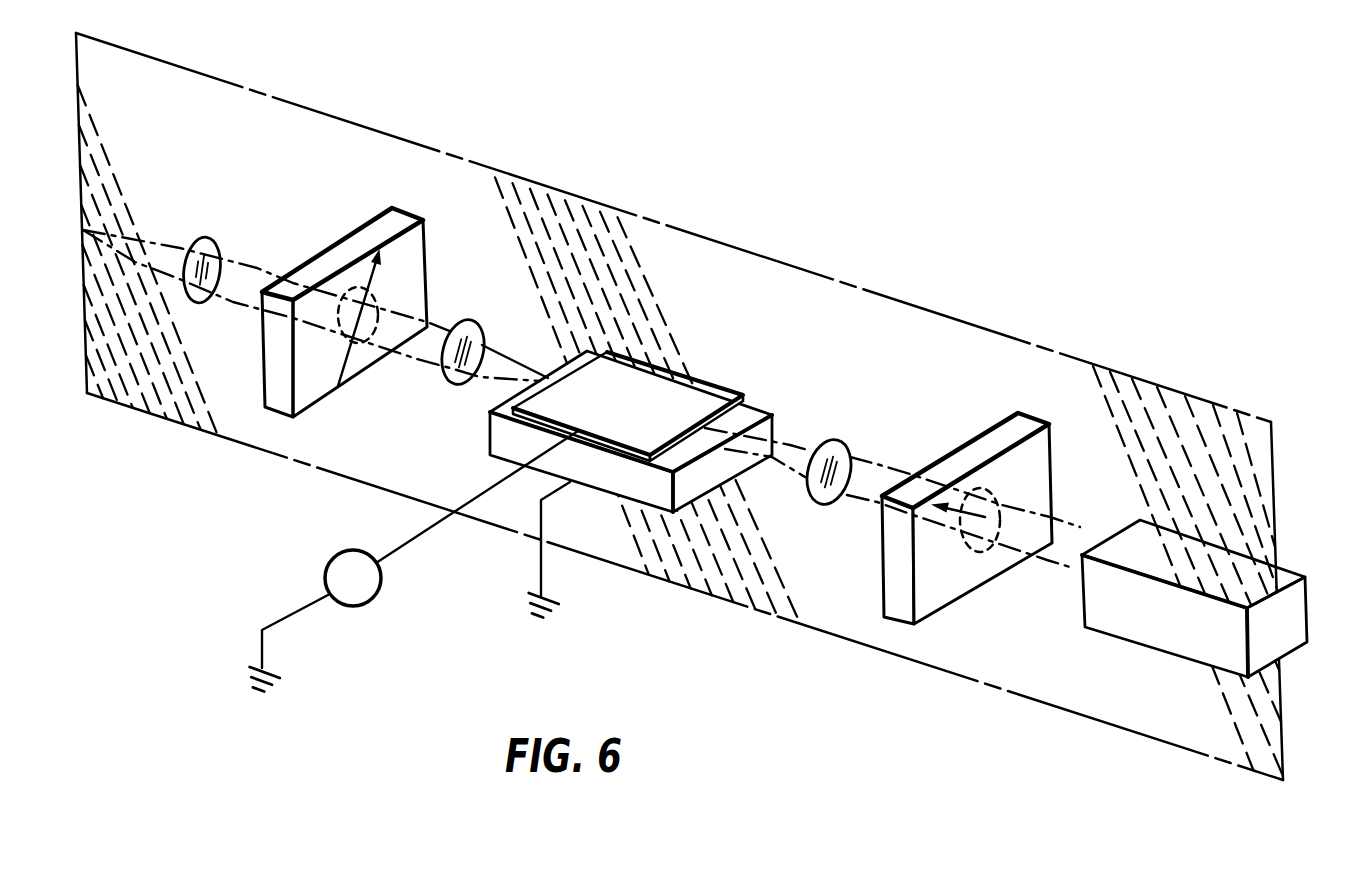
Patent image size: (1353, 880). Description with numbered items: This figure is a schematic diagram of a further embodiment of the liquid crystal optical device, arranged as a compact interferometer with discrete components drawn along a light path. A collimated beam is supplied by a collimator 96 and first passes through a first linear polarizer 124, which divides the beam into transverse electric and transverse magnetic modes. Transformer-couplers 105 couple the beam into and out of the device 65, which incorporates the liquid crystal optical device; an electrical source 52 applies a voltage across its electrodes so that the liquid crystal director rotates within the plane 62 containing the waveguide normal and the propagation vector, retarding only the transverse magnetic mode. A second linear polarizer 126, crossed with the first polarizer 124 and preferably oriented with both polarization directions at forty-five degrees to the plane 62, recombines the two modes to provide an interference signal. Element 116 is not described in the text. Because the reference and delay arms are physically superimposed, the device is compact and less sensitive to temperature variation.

The plane 62 is at (661, 232).
The collimator 96 is at (203, 238).
The first linear polarizer 124 is at (362, 237).
The transformer-couplers 105 is at (470, 318).
The device 65 is at (720, 397).
The second linear polarizer 126 is at (980, 443).
The detector 116 is at (1122, 535).
The electrical source 52 is at (322, 572).